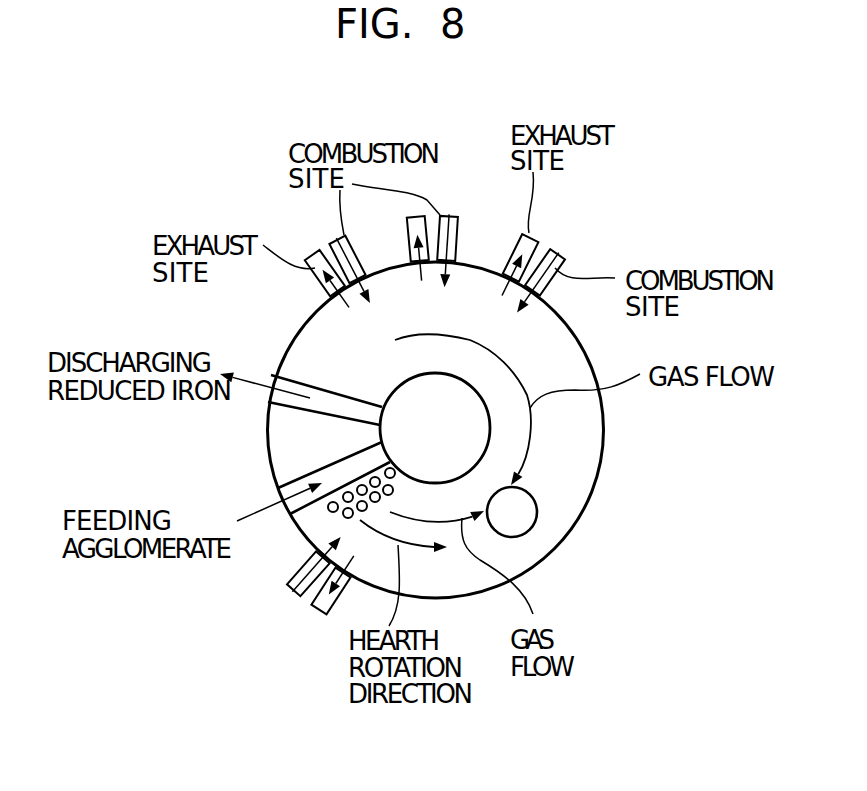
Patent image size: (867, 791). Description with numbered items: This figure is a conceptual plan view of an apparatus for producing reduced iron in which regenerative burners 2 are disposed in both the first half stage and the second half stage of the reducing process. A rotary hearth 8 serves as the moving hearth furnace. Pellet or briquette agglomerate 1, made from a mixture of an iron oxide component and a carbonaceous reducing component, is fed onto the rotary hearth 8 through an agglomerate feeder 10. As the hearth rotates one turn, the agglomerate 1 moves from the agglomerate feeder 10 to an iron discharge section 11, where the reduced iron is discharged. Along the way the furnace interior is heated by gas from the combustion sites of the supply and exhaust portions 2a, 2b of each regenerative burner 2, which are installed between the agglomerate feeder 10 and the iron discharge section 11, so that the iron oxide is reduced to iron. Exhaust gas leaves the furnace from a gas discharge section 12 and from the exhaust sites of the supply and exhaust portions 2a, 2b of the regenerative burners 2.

The agglomerate 1 is at (329, 507).
The regenerative burner 2 is at (437, 420).
The supply and exhaust portion 2a is at (553, 255).
The supply and exhaust portion 2b is at (533, 236).
The rotary hearth 8 is at (578, 437).
The agglomerate feeder 10 is at (280, 494).
The iron discharge section 11 is at (274, 378).
The gas discharge section 12 is at (517, 517).